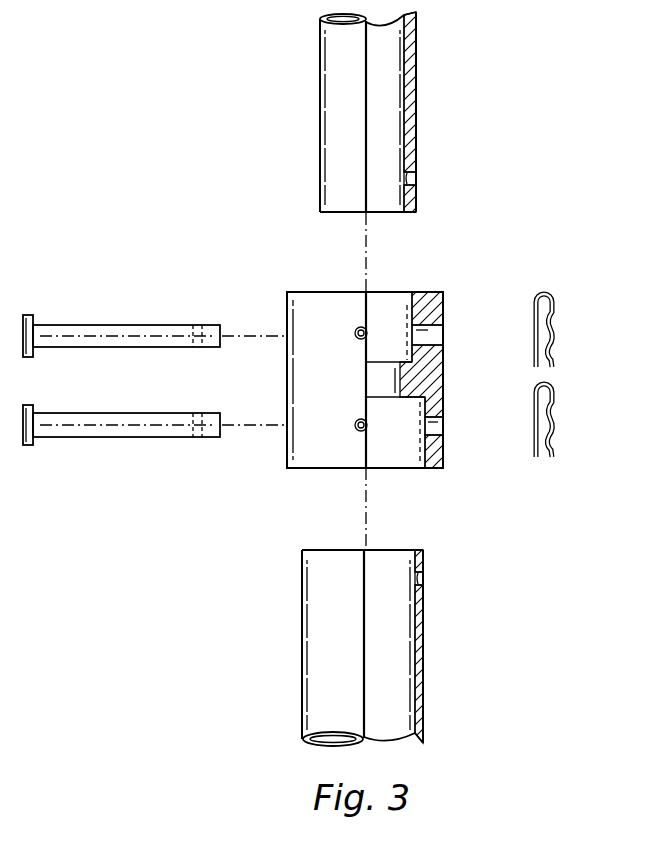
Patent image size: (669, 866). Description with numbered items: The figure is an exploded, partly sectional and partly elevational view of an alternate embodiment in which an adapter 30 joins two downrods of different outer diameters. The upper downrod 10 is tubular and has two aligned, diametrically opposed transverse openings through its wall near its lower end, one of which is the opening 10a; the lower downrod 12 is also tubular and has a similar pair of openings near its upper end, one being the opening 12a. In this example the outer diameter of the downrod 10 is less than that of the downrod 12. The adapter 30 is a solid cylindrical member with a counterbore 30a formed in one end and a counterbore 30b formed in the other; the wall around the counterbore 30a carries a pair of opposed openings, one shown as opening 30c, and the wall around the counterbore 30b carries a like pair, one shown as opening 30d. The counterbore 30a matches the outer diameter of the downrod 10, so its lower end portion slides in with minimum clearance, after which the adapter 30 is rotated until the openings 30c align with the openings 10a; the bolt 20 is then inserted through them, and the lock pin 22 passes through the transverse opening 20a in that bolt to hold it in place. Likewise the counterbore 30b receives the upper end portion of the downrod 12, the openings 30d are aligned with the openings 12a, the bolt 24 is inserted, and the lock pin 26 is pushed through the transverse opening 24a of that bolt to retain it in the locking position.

The downrod 10 is at (322, 102).
The transverse opening 10a is at (416, 185).
The downrod 12 is at (302, 655).
The transverse opening 12a is at (424, 578).
The bolt 20 is at (108, 323).
The transverse opening 20a is at (185, 325).
The bolt 24 is at (108, 439).
The transverse opening 24a is at (185, 438).
The lock pin 22 is at (556, 300).
The lock pin 26 is at (556, 392).
The adapter 30 is at (311, 287).
The counterbore 30a is at (413, 299).
The counterbore 30b is at (424, 462).
The opening 30c is at (430, 334).
The opening 30d is at (434, 424).